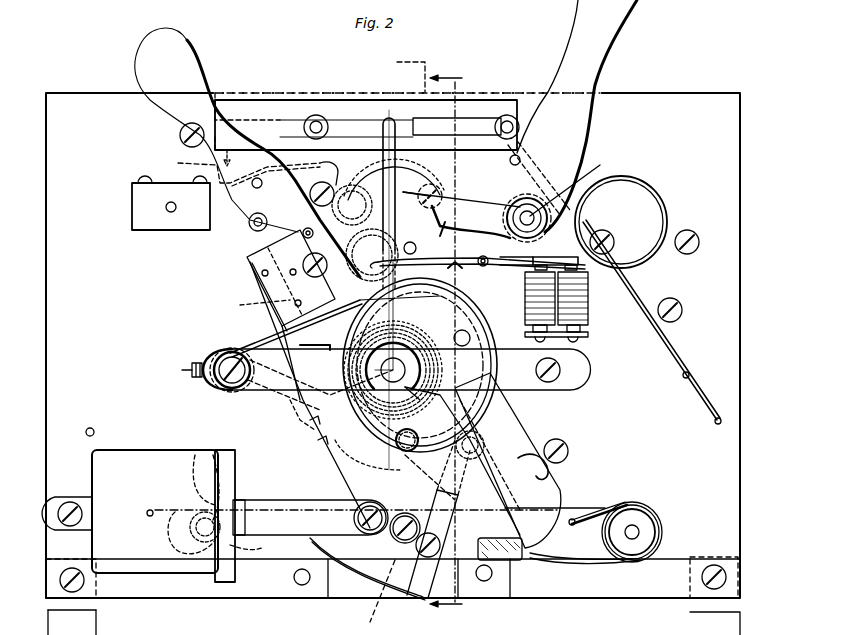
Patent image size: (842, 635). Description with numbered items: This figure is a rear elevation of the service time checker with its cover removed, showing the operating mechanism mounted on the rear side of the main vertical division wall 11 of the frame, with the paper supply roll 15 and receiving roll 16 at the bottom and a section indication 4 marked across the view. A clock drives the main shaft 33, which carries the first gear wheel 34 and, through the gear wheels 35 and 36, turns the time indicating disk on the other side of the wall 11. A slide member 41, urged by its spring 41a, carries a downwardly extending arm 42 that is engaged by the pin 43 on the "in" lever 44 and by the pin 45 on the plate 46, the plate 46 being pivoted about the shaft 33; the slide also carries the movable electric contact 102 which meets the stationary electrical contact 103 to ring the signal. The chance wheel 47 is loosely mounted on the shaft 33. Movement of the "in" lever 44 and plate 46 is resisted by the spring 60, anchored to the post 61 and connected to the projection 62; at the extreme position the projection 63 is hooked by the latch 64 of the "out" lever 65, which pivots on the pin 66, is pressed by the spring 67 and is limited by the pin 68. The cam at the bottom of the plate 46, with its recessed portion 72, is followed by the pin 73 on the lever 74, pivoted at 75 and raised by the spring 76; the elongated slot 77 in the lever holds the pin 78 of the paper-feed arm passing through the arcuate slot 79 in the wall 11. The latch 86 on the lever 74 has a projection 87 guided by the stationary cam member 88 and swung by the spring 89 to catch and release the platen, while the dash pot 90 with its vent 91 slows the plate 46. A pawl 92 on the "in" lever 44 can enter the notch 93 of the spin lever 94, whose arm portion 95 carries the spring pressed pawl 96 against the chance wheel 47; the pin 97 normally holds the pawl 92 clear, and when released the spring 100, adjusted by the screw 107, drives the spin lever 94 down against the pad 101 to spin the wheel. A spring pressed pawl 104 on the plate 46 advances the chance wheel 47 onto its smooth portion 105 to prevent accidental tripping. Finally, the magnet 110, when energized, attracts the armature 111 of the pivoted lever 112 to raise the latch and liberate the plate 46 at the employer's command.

The section line 4 is at (427, 341).
The main vertical division wall 11 is at (393, 345).
The supply roll 15 is at (690, 596).
The receiving roll 16 is at (111, 597).
The main shaft 33 is at (345, 435).
The gear wheel 34 is at (393, 372).
The gear wheel 35 is at (377, 255).
The gear wheel 36 is at (437, 184).
The slide member 41 is at (328, 107).
The spring 41a is at (640, 178).
The arm 42 is at (383, 144).
The pin 43 is at (261, 188).
The "in" lever 44 is at (190, 42).
The pin 45 is at (341, 197).
The plate 46 is at (251, 294).
The chance wheel 47 is at (290, 445).
The spring 60 is at (235, 345).
The post 61 is at (225, 386).
The projection 62 is at (395, 444).
The projection 63 is at (277, 238).
The latch 64 is at (468, 225).
The "out" lever 65 is at (610, 28).
The pin 66 is at (563, 195).
The spring 67 is at (445, 187).
The pin 68 is at (520, 158).
The recessed portion 72 is at (357, 528).
The pin 73 is at (392, 560).
The lever 74 is at (586, 515).
The pivot 75 is at (637, 530).
The spring 76 is at (600, 565).
The elongated slot 77 is at (249, 551).
The pin 78 is at (200, 520).
The arcuate slot 79 is at (213, 452).
The latch 86 is at (422, 506).
The projection 87 is at (382, 592).
The stationary cam member 88 is at (484, 578).
The spring 89 is at (324, 578).
The dash pot 90 is at (138, 505).
The vent 91 is at (147, 514).
The pawl 92 is at (247, 304).
The notch 93 is at (398, 356).
The spin lever 94 is at (540, 404).
The arm portion 95 is at (558, 440).
The spring pressed pawl 96 is at (470, 455).
The pin 97 is at (262, 322).
The spring 100 is at (320, 389).
The pad 101 is at (520, 562).
The movable electric contact 102 is at (178, 163).
The stationary electrical contact 103 is at (334, 167).
The spring pressed pawl 104 is at (470, 274).
The smooth portion 105 is at (528, 290).
The adjustable screw 107 is at (182, 370).
The magnet 110 is at (585, 312).
The armature 111 is at (644, 261).
The lever 112 is at (477, 274).